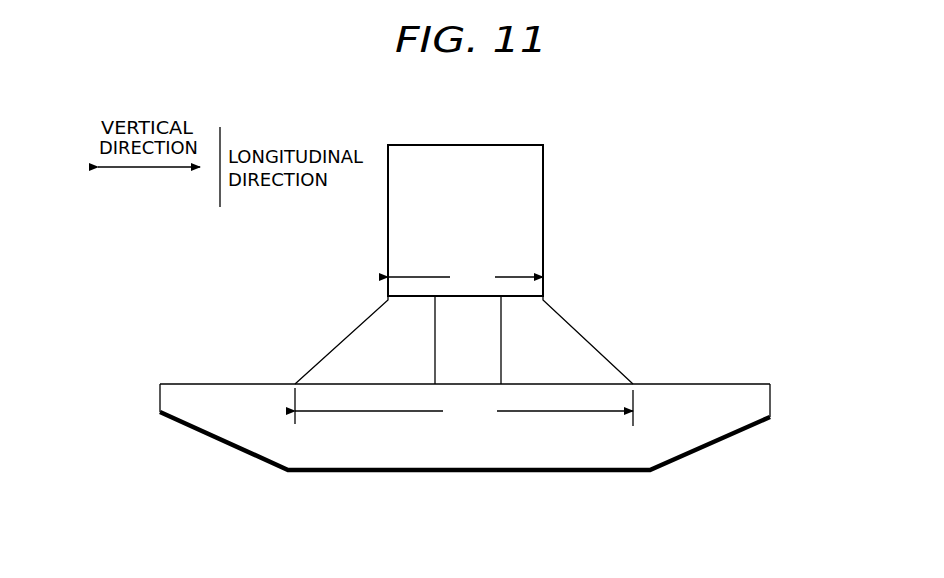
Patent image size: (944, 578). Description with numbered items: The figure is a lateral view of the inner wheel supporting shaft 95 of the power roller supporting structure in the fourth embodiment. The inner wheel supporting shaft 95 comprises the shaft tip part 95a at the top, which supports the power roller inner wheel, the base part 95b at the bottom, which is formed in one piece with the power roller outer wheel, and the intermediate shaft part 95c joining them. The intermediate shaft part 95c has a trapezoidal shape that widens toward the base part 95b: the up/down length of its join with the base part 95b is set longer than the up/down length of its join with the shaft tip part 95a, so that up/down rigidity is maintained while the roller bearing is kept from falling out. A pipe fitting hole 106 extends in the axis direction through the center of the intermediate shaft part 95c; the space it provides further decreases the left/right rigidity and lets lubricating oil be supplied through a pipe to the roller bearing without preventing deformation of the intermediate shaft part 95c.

The inner wheel supporting shaft 95 is at (360, 133).
The shaft tip part 95a is at (548, 145).
The base part 95b is at (655, 470).
The intermediate shaft part 95c is at (548, 301).
The pipe fitting hole 106 is at (436, 346).